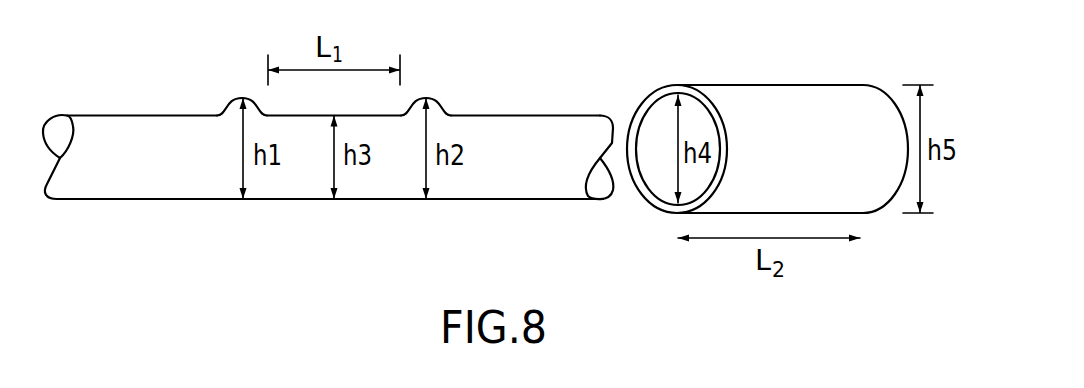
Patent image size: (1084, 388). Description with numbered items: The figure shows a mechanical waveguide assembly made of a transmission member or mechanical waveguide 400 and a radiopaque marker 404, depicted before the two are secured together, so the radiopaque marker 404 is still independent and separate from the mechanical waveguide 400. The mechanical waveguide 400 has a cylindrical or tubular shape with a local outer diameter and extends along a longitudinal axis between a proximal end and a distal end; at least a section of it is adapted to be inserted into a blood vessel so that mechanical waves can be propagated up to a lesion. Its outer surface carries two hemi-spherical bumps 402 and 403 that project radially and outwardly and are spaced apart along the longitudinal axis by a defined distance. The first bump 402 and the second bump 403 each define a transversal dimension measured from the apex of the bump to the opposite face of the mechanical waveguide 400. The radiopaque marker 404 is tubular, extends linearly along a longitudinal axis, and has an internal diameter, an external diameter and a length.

The mechanical waveguide 400 is at (102, 128).
The first bump 402 is at (221, 94).
The second bump 403 is at (456, 94).
The radiopaque marker 404 is at (748, 68).